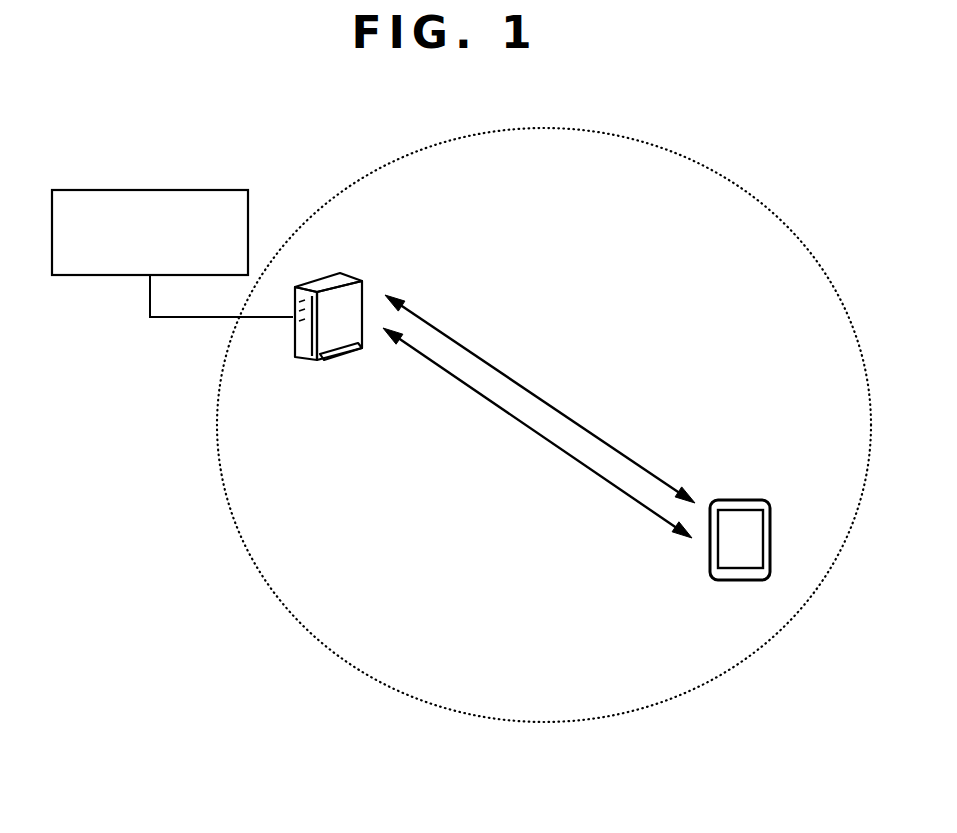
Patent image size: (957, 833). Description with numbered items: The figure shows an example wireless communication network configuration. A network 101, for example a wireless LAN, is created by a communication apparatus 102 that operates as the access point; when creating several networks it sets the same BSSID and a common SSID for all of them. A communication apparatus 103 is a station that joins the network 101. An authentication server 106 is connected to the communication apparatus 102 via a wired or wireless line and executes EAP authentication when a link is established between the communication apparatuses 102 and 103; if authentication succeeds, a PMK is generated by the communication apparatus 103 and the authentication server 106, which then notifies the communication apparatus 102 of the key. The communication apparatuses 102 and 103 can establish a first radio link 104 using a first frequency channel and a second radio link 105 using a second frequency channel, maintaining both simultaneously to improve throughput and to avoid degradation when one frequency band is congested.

The network 101 is at (426, 704).
The communication apparatus 102 is at (317, 362).
The communication apparatus 103 is at (740, 498).
The first radio link 104 is at (567, 417).
The second radio link 105 is at (513, 418).
The authentication server 106 is at (153, 188).